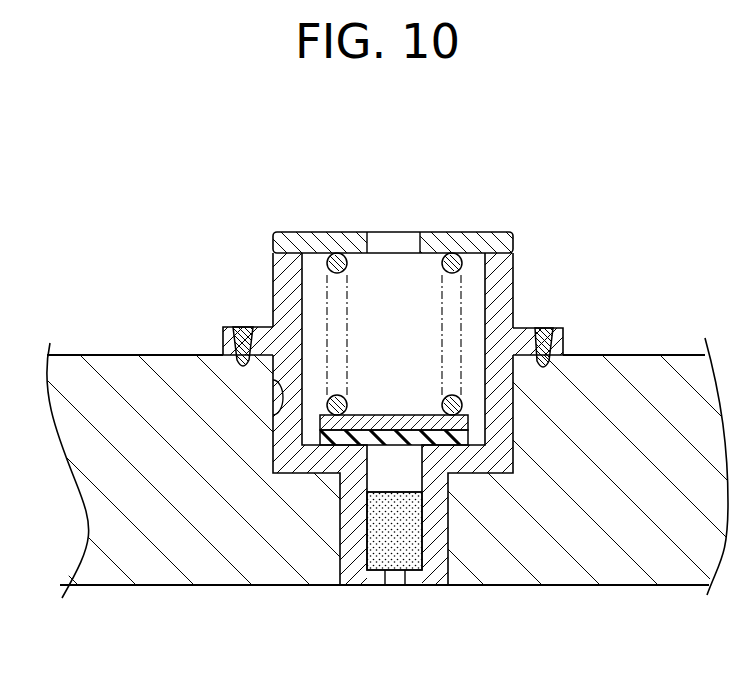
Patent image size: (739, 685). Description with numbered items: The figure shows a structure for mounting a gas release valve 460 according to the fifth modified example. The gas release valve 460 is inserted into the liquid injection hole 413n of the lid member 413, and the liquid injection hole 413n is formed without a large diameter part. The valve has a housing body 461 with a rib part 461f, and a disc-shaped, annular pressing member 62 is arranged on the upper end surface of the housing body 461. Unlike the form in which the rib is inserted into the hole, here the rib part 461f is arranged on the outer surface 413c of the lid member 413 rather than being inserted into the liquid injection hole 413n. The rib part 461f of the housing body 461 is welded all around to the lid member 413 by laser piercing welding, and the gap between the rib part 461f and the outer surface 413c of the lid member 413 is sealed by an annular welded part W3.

The pressing member 62 is at (330, 232).
The gas release valve 460 is at (470, 232).
The housing body 461 is at (280, 283).
The rib part 461f is at (522, 330).
The annular welded part W3 is at (545, 328).
The outer surface 413c is at (162, 355).
The lid member 413 is at (632, 355).
The liquid injection hole 413n is at (273, 415).